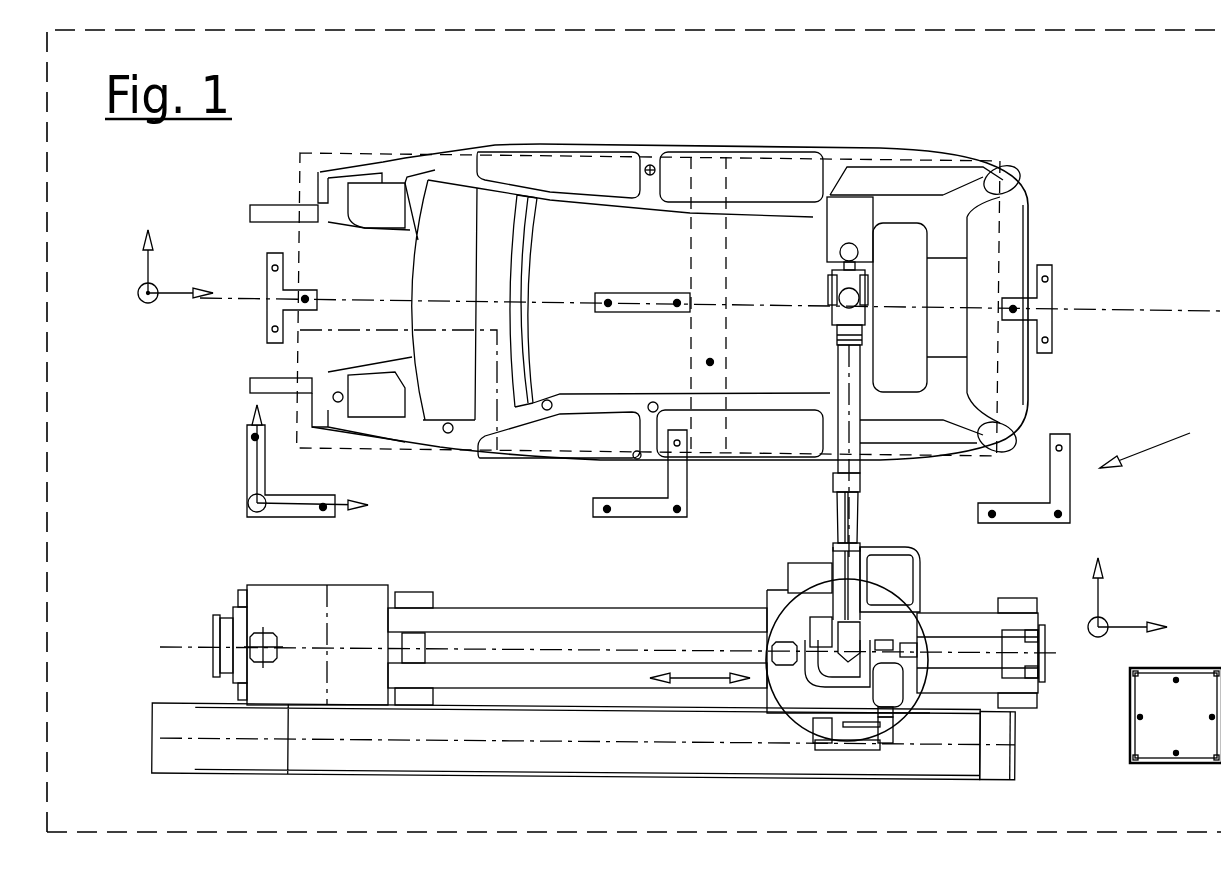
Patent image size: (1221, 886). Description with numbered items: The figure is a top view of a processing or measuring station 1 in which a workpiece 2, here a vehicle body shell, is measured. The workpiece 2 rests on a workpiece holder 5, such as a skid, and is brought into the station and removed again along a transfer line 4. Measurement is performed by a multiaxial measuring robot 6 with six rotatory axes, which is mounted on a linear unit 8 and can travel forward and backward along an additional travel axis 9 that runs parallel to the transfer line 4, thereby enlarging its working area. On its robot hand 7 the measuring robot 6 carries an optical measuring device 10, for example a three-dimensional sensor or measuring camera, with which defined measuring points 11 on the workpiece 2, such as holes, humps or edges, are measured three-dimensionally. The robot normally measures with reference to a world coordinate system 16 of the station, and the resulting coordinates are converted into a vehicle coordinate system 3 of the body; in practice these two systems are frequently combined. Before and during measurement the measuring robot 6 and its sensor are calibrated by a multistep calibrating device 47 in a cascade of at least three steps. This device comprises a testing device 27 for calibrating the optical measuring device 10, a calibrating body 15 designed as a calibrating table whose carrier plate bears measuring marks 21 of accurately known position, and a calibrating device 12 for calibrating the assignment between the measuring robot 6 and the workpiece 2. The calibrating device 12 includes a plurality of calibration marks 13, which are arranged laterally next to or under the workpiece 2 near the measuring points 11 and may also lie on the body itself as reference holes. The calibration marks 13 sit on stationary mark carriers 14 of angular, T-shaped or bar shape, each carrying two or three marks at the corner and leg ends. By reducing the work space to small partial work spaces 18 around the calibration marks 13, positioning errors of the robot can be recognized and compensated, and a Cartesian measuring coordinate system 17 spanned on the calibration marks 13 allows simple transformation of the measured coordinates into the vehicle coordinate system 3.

The processing or measuring station 1 is at (1220, 118).
The workpiece 2 is at (893, 150).
The vehicle coordinate system 3 is at (148, 265).
The transfer line 4 is at (1105, 312).
The workpiece holder 5 is at (692, 287).
The measuring robot 6 is at (835, 510).
The robot hand 7 is at (832, 283).
The linear unit 8 is at (473, 618).
The travel axis 9 is at (697, 650).
The optical measuring device 10 is at (840, 247).
The measuring points 11 is at (337, 392).
The calibrating device 12 is at (1160, 443).
The calibration marks 13 is at (650, 165).
The mark carriers 14 is at (267, 315).
The calibrating body 15 is at (1162, 700).
The world coordinate system 16 is at (1098, 602).
The measuring coordinate system 17 is at (257, 477).
The partial work space 18 is at (388, 330).
The measuring marks 21 is at (1176, 755).
The testing device 27 is at (880, 237).
The multistep calibrating device 47 is at (205, 553).